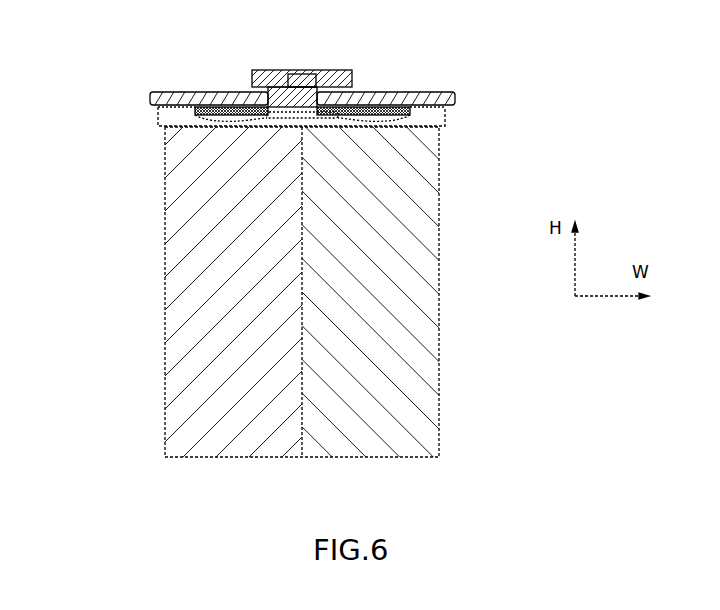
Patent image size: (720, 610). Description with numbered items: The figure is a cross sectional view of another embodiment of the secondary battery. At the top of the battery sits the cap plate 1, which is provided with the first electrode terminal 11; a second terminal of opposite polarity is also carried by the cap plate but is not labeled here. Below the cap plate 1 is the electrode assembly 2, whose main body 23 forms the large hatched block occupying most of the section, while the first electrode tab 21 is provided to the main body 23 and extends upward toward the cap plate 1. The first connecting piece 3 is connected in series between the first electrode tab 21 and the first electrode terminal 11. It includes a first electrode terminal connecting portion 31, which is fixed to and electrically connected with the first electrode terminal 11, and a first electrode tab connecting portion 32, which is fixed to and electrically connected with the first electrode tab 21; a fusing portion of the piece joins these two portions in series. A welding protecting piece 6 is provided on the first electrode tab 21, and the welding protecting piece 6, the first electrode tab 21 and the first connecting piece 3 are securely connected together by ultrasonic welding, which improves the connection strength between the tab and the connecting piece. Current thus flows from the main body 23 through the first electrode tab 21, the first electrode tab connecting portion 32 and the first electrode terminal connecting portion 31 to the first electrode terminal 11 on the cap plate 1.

The cap plate 1 is at (171, 92).
The first electrode terminal 11 is at (297, 72).
The electrode assembly 2 is at (52, 183).
The first electrode tab 21 is at (167, 160).
The main body 23 is at (167, 262).
The first connecting piece 3 is at (423, 44).
The first electrode terminal connecting portion 31 is at (333, 78).
The first electrode tab connecting portion 32 is at (213, 106).
The welding protecting piece 6 is at (445, 121).